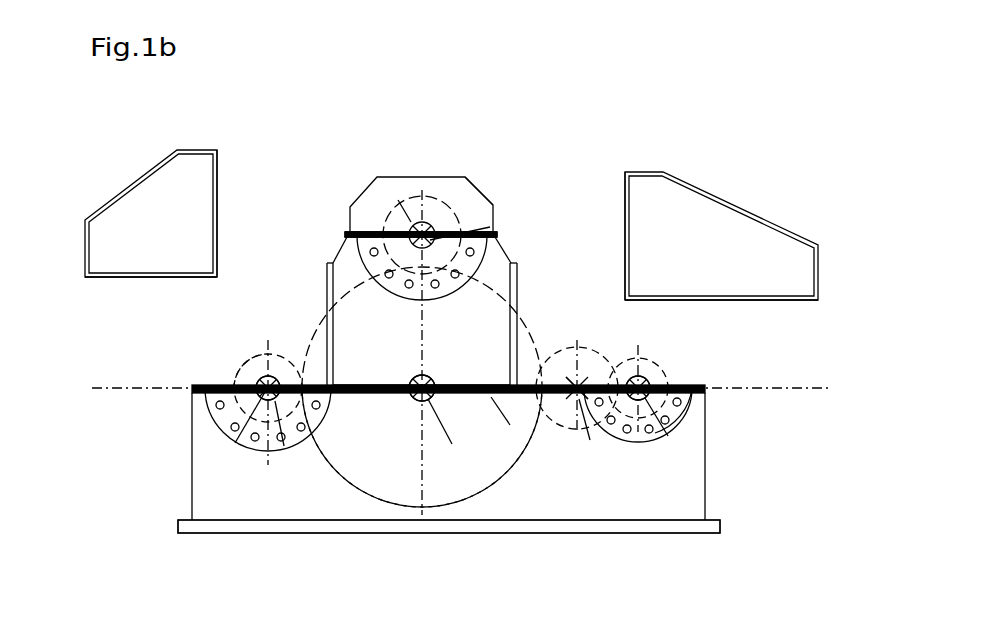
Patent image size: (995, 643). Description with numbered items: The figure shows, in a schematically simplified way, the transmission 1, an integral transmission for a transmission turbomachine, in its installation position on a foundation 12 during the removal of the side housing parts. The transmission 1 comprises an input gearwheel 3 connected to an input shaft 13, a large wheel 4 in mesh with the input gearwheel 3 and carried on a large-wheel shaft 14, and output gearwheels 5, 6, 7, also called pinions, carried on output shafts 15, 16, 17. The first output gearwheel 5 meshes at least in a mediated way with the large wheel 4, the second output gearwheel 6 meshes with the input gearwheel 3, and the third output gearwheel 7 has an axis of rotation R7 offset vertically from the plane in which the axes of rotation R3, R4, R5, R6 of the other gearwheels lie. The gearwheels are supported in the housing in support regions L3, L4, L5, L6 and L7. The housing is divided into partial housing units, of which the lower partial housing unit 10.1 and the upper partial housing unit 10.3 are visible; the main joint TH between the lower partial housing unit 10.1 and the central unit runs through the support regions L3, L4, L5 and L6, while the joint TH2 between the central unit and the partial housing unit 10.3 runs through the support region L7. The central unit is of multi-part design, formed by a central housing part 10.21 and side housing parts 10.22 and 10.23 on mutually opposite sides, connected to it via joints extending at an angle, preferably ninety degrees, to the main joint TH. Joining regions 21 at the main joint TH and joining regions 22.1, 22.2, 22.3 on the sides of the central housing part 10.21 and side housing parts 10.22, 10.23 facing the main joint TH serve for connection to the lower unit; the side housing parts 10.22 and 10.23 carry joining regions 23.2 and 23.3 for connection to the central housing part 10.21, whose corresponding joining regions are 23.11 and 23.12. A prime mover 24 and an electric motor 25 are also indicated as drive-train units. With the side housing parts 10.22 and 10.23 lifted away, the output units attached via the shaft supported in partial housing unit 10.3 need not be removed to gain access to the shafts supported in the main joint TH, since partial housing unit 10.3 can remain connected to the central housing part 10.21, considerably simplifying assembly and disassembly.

The transmission 1 is at (320, 136).
The first partial housing unit 10.1 is at (198, 458).
The central housing part 10.21 is at (342, 248).
The side housing part 10.22 is at (183, 168).
The side housing part 10.23 is at (800, 265).
The third partial housing unit 10.3 is at (460, 194).
The foundation 12 is at (653, 527).
The input shaft 13 is at (510, 425).
The large-wheel shaft 14 is at (405, 437).
The output shaft 15 is at (267, 378).
The output shaft 16 is at (707, 420).
The output shaft 17 is at (463, 200).
The joining region 21 is at (213, 373).
The joining region 22.1 is at (372, 385).
The joining region 22.2 is at (140, 278).
The joining region 22.3 is at (770, 301).
The joining region 23.11 is at (327, 273).
The joining region 23.12 is at (518, 273).
The joining region 23.2 is at (220, 203).
The joining region 23.3 is at (620, 205).
The prime mover 24 is at (368, 234).
The electric motor 25 is at (500, 252).
The input gearwheel 3 is at (566, 378).
The large wheel 4 is at (480, 470).
The first output gearwheel 5 is at (297, 362).
The second output gearwheel 6 is at (658, 374).
The third output gearwheel 7 is at (437, 200).
The support region L3 is at (590, 440).
The support region L4 is at (452, 444).
The support region L5 is at (284, 446).
The support region L6 is at (668, 436).
The support region L7 is at (398, 200).
The axis of rotation R3 is at (577, 383).
The axis of rotation R4 is at (412, 399).
The axis of rotation R5 is at (235, 443).
The axis of rotation R6 is at (637, 417).
The axis of rotation R7 is at (490, 227).
The main joint TH is at (500, 480).
The joint TH2 is at (345, 236).